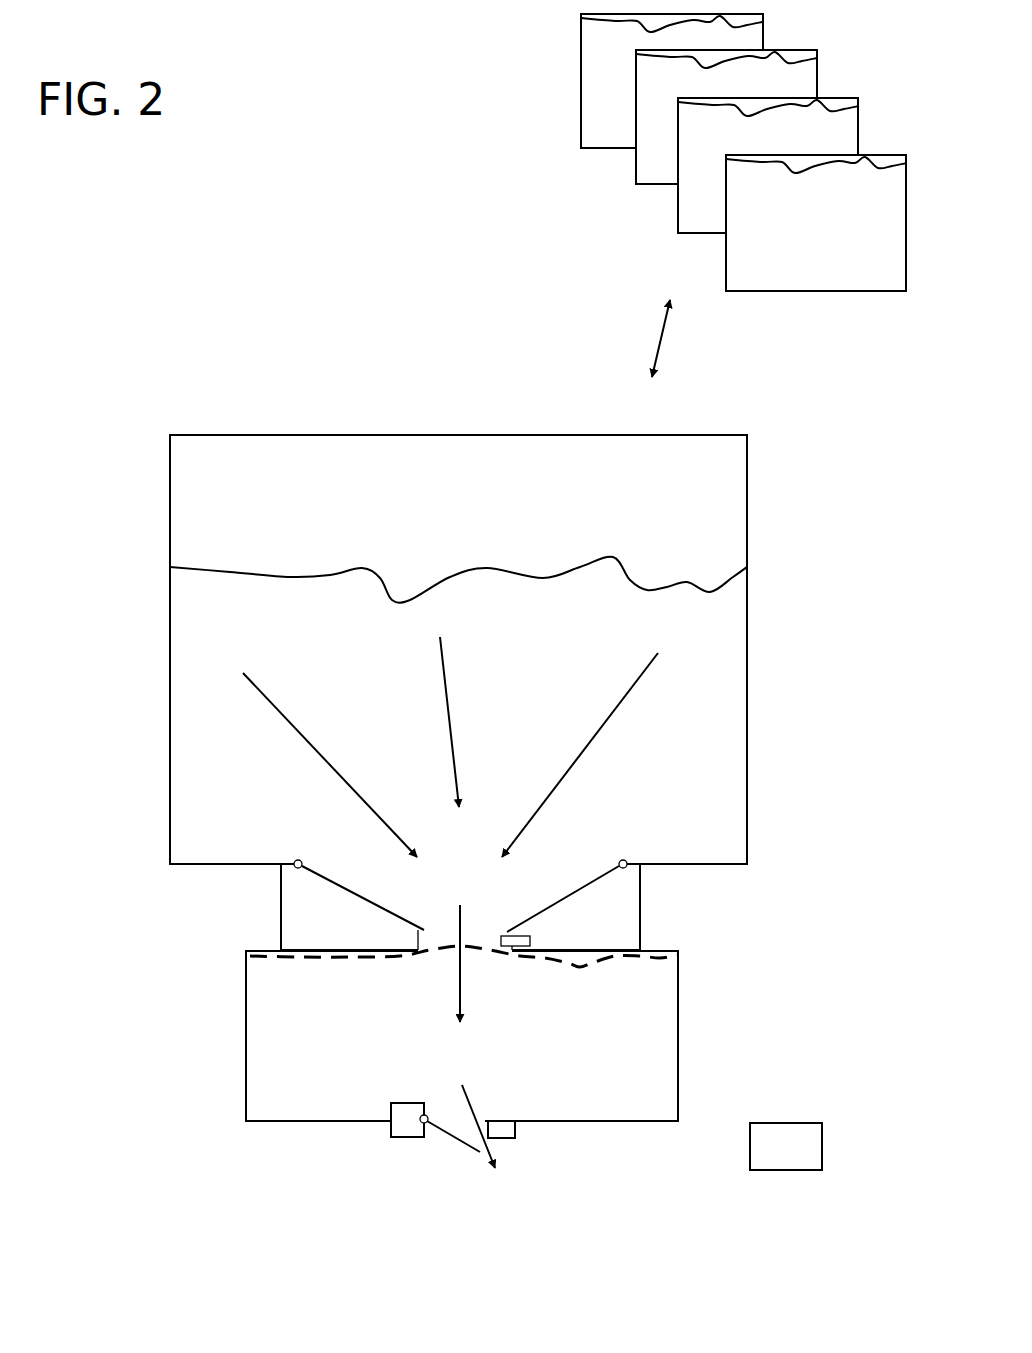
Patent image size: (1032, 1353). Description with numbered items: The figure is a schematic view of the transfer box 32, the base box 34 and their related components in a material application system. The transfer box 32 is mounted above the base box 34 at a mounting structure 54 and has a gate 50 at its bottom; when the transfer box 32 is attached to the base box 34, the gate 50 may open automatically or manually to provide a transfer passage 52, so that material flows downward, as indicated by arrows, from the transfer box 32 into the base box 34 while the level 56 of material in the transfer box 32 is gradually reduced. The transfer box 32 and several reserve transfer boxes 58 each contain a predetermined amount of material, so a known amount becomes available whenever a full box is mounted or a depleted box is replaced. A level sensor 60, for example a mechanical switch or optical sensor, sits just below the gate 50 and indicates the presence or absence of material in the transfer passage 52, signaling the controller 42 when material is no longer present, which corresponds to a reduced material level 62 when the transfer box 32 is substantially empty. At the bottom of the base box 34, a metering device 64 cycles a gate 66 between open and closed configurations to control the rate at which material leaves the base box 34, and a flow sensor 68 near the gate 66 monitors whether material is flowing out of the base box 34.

The transfer box 32 is at (242, 435).
The base box 34 is at (246, 1084).
The controller 42 is at (775, 1171).
The gate 50 is at (340, 890).
The transfer passage 52 is at (500, 913).
The mounting structure 54 is at (281, 920).
The level 56 is at (232, 567).
The reserve transfer boxes 58 is at (596, 187).
The level sensor 60 is at (531, 937).
The reduced material level 62 is at (581, 967).
The metering device 64 is at (391, 1138).
The gate 66 is at (460, 1143).
The flow sensor 68 is at (513, 1138).